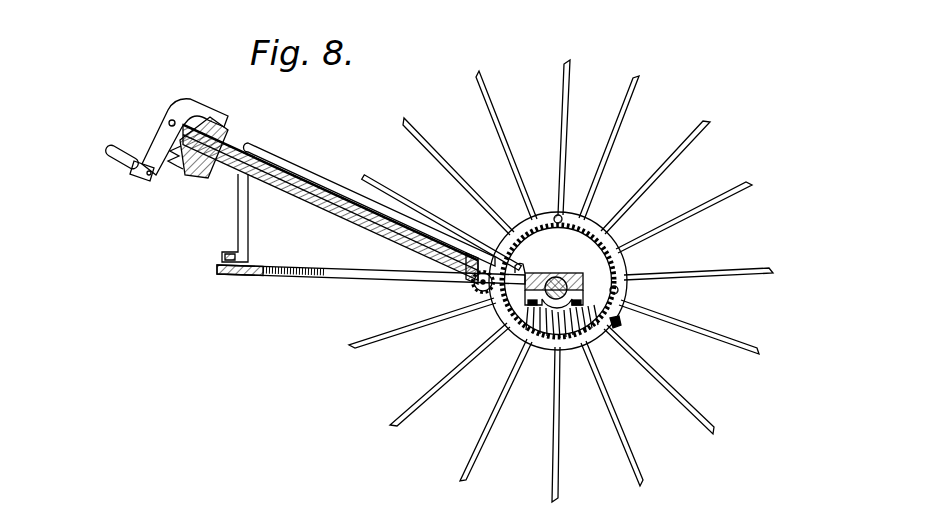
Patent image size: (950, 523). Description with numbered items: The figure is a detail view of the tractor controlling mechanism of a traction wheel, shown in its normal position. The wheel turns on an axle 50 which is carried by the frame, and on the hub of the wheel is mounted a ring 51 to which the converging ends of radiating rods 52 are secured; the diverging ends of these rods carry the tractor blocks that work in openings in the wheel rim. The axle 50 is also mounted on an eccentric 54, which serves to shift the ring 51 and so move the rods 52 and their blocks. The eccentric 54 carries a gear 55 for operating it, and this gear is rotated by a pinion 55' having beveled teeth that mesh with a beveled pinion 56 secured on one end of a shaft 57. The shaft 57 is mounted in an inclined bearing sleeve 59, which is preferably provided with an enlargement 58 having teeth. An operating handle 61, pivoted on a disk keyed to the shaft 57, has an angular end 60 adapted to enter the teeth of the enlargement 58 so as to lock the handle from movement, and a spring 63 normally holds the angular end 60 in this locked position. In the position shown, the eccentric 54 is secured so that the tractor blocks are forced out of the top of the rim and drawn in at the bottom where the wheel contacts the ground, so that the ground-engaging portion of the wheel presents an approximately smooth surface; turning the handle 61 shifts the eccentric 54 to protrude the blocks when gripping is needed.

The axle 50 is at (557, 300).
The ring 51 is at (608, 247).
The radiating rods 52 is at (718, 340).
The eccentric 54 is at (581, 232).
The gear 55 is at (633, 333).
The pinion 55' is at (457, 290).
The beveled pinion 56 is at (465, 245).
The shaft 57 is at (274, 176).
The enlargement 58 is at (225, 138).
The inclined bearing sleeve 59 is at (311, 200).
The angular end 60 is at (213, 114).
The operating handle 61 is at (143, 179).
The spring 63 is at (172, 170).